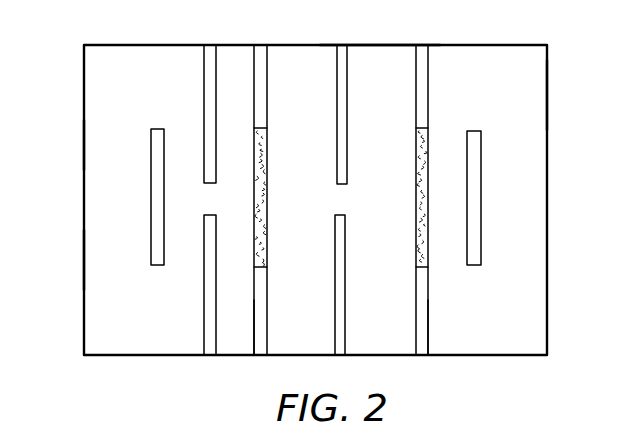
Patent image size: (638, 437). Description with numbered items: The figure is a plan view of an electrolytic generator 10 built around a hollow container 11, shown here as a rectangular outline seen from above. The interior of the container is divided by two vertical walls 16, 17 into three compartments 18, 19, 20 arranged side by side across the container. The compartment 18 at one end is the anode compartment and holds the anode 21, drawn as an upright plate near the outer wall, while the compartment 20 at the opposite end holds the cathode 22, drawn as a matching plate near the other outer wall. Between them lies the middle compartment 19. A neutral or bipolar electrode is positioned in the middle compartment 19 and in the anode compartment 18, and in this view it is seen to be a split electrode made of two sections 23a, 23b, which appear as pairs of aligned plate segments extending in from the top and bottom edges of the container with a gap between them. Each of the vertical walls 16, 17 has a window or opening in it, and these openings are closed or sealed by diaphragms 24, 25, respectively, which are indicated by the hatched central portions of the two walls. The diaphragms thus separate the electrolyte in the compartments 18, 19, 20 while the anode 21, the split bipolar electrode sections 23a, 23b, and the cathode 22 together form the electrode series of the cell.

The electrolytic generator 10 is at (77, 122).
The hollow container 11 is at (84, 250).
The vertical wall 16 is at (254, 342).
The vertical wall 17 is at (423, 345).
The compartment 18 is at (88, 143).
The compartment 19 is at (380, 55).
The compartment 20 is at (528, 98).
The anode 21 is at (151, 183).
The cathode 22 is at (481, 188).
The bipolar electrode section 23a is at (204, 92).
The bipolar electrode section 23b is at (204, 323).
The diaphragm 24 is at (267, 203).
The diaphragm 25 is at (416, 203).